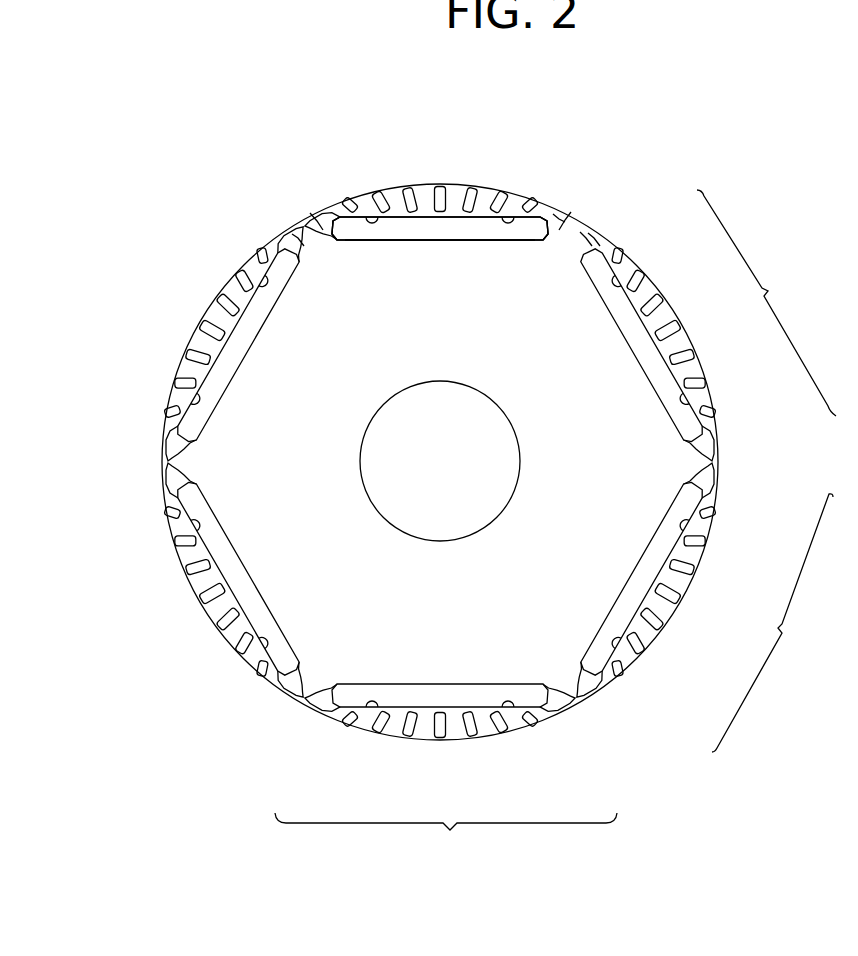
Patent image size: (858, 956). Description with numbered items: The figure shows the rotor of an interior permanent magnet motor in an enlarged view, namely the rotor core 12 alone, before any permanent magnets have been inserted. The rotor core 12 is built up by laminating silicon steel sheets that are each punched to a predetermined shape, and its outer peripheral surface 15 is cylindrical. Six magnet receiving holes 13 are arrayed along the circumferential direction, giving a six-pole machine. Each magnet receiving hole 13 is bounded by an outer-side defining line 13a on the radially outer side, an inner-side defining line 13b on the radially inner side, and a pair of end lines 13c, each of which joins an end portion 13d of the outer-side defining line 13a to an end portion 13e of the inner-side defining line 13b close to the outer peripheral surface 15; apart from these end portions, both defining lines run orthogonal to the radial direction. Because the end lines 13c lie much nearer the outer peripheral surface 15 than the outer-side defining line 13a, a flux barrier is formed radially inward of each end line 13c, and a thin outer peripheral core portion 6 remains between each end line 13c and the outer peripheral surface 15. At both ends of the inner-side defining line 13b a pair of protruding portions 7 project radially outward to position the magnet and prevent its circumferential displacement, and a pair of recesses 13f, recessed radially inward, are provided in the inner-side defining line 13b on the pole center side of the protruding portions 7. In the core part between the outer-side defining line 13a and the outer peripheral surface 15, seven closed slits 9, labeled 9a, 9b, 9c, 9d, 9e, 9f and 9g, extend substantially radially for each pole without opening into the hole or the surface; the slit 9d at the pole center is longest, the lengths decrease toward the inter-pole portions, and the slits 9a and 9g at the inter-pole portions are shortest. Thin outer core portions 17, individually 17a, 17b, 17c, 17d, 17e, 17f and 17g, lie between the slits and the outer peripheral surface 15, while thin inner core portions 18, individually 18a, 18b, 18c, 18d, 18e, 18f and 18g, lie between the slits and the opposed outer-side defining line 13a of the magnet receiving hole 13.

The rotor core 12 is at (75, 153).
The outer peripheral surface 15 is at (207, 310).
The magnet receiving hole 13 is at (482, 228).
The outer-side defining line 13a is at (357, 203).
The inner-side defining line 13b is at (512, 241).
The end line 13c is at (308, 222).
The end portion of outer-side defining line 13d is at (553, 218).
The end portion of inner-side defining line 13e is at (588, 233).
The recess 13f is at (295, 235).
The protruding portion 7 is at (340, 221).
The thin outer peripheral core portion 6 is at (288, 228).
The slit 9 is at (766, 303).
The slit 9a is at (620, 258).
The slit 9b is at (640, 283).
The slit 9c is at (657, 306).
The slit 9d is at (672, 334).
The slit 9e is at (687, 360).
The slit 9f is at (700, 385).
The slit 9g is at (710, 412).
The thin outer core portion 17 is at (772, 623).
The thin outer core portion 17a is at (712, 518).
The thin outer core portion 17b is at (703, 550).
The thin outer core portion 17c is at (693, 576).
The thin outer core portion 17d is at (678, 598).
The thin outer core portion 17e is at (665, 625).
The thin outer core portion 17f is at (652, 652).
The thin outer core portion 17g is at (625, 673).
The thin inner core portion 18 is at (446, 838).
The thin inner core portion 18a is at (533, 727).
The thin inner core portion 18b is at (500, 732).
The thin inner core portion 18c is at (472, 738).
The thin inner core portion 18d is at (438, 740).
The thin inner core portion 18e is at (408, 738).
The thin inner core portion 18f is at (375, 732).
The thin inner core portion 18g is at (348, 727).